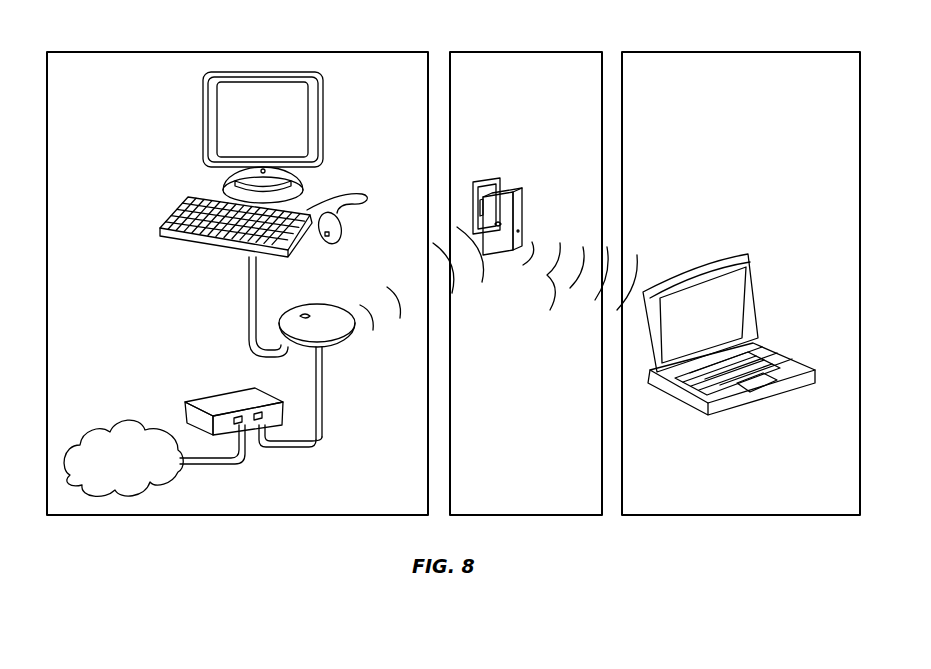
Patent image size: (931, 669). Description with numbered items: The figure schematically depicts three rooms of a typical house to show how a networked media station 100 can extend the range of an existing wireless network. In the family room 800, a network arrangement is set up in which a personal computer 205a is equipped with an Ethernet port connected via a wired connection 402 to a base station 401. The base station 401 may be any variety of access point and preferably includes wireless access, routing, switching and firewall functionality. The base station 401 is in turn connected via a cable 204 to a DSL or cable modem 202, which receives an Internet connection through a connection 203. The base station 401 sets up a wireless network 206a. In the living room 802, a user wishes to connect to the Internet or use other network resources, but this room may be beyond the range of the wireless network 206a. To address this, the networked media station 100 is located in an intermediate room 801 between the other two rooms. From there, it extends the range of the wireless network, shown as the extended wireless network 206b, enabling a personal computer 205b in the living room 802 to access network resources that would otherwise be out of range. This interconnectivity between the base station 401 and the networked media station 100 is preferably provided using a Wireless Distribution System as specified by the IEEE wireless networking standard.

The family room 800 is at (350, 52).
The intermediate room 801 is at (530, 52).
The living room 802 is at (778, 52).
The personal computer 205a is at (322, 130).
The personal computer 205b is at (760, 293).
The networked media station 100 is at (510, 195).
The wireless network 206a is at (420, 277).
The extended wireless network range 206b is at (578, 289).
The base station 401 is at (337, 350).
The connection 402 is at (246, 326).
The DSL or cable modem 202 is at (185, 408).
The connection 203 is at (207, 463).
The cable 204 is at (295, 453).